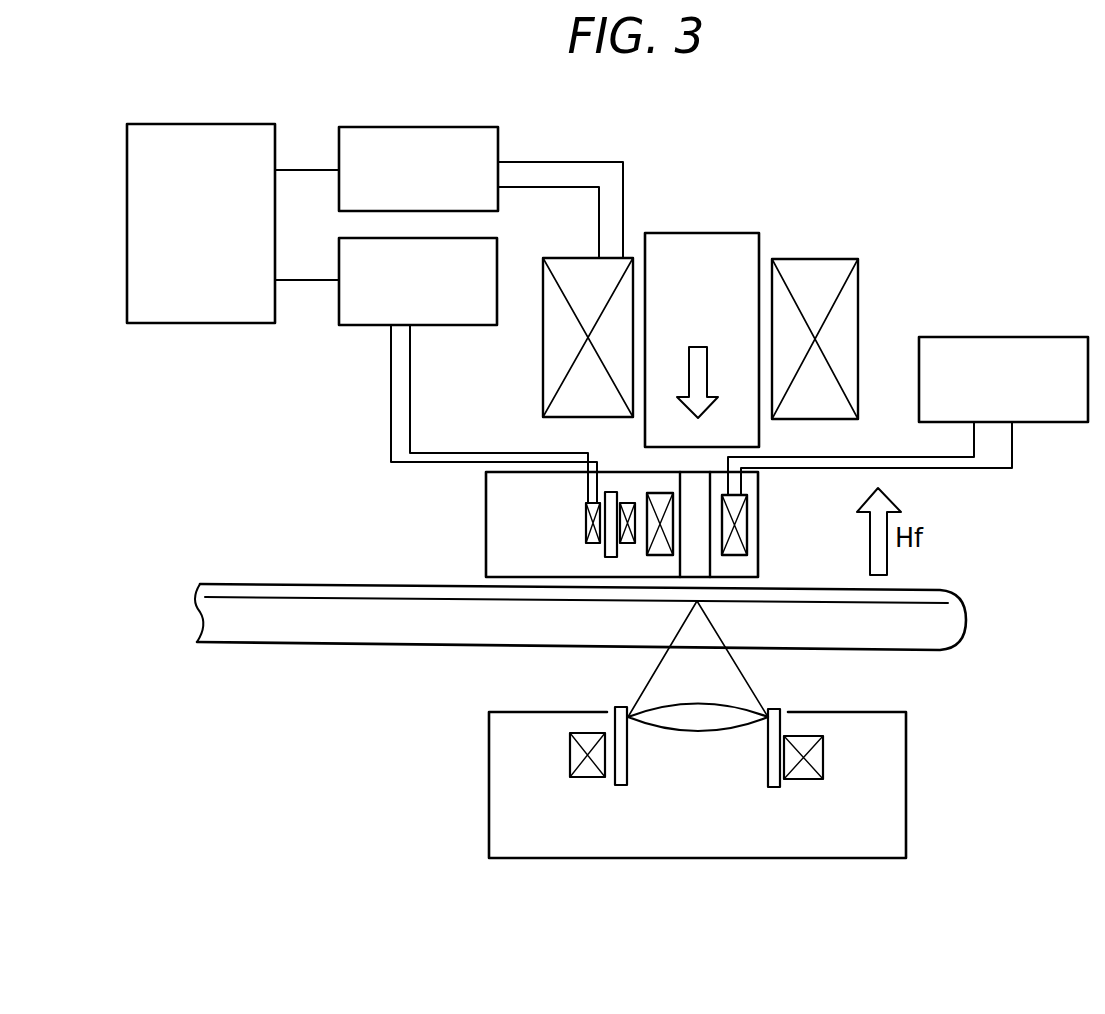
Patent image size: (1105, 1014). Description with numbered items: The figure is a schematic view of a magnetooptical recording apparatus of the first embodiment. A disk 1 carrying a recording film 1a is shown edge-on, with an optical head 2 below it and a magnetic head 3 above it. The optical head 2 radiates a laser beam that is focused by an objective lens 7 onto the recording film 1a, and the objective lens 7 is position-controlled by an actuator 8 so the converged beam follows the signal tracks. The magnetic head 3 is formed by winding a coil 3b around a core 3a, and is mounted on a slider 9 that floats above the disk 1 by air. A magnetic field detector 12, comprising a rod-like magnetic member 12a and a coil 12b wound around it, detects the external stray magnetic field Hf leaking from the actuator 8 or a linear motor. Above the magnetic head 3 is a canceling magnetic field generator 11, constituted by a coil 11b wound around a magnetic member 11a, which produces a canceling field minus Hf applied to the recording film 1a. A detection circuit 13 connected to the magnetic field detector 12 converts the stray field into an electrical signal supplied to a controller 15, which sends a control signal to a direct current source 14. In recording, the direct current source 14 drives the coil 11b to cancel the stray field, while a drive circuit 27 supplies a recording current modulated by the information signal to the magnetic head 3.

The disk 1 is at (580, 617).
The recording film 1a is at (257, 598).
The optical head 2 is at (675, 729).
The magnetic head 3 is at (778, 524).
The core 3a is at (705, 567).
The coil 3b is at (762, 525).
The objective lens 7 is at (732, 712).
The actuator 8 is at (570, 758).
The slider 9 is at (490, 563).
The canceling magnetic field generator 11 is at (755, 290).
The magnetic member 11a is at (702, 232).
The coil 11b is at (817, 301).
The magnetic field detector 12 is at (499, 514).
The rod-like magnetic member 12a is at (588, 498).
The coil 12b is at (586, 525).
The detection circuit 13 is at (498, 253).
The direct current source 14 is at (461, 126).
The controller 15 is at (229, 124).
The drive circuit 27 is at (1034, 336).